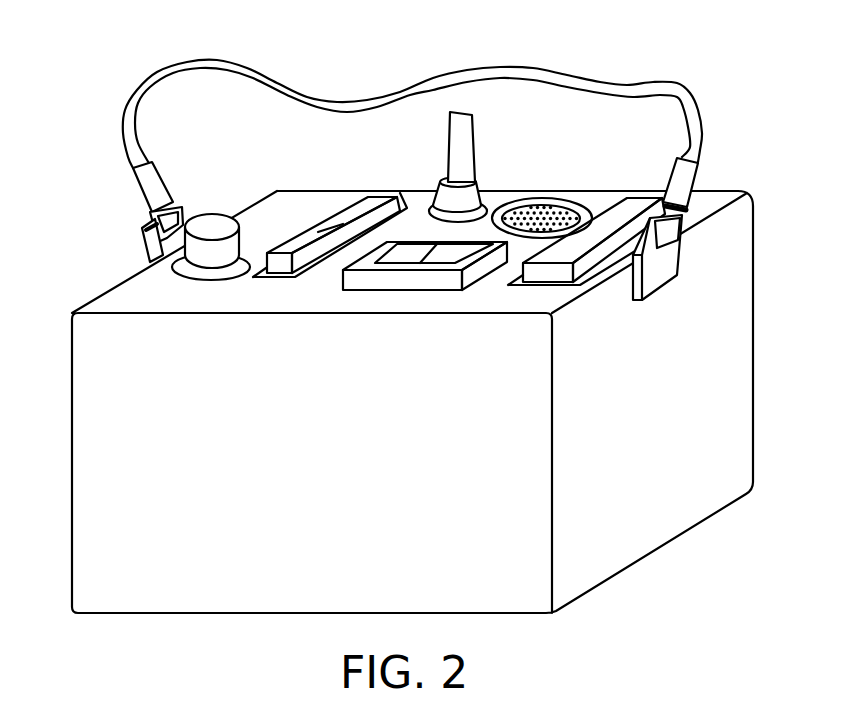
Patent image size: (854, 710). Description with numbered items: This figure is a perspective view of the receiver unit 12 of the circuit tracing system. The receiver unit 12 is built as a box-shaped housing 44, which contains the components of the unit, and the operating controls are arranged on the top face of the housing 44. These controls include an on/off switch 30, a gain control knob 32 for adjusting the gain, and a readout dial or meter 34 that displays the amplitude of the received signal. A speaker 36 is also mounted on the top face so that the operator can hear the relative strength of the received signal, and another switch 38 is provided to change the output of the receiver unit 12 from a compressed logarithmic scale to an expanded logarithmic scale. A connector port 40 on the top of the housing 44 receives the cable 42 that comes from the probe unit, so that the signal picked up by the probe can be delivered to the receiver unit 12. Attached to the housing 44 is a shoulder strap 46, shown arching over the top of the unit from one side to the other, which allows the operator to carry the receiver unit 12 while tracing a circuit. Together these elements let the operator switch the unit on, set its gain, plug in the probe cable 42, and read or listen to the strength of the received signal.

The receiver unit 12 is at (76, 186).
The on/off switch 30 is at (648, 202).
The gain control knob 32 is at (210, 223).
The readout dial or meter 34 is at (423, 282).
The speaker 36 is at (537, 202).
The switch 38 is at (373, 197).
The connector port 40 is at (472, 202).
The cable 42 is at (460, 132).
The housing 44 is at (725, 340).
The shoulder strap 46 is at (602, 80).